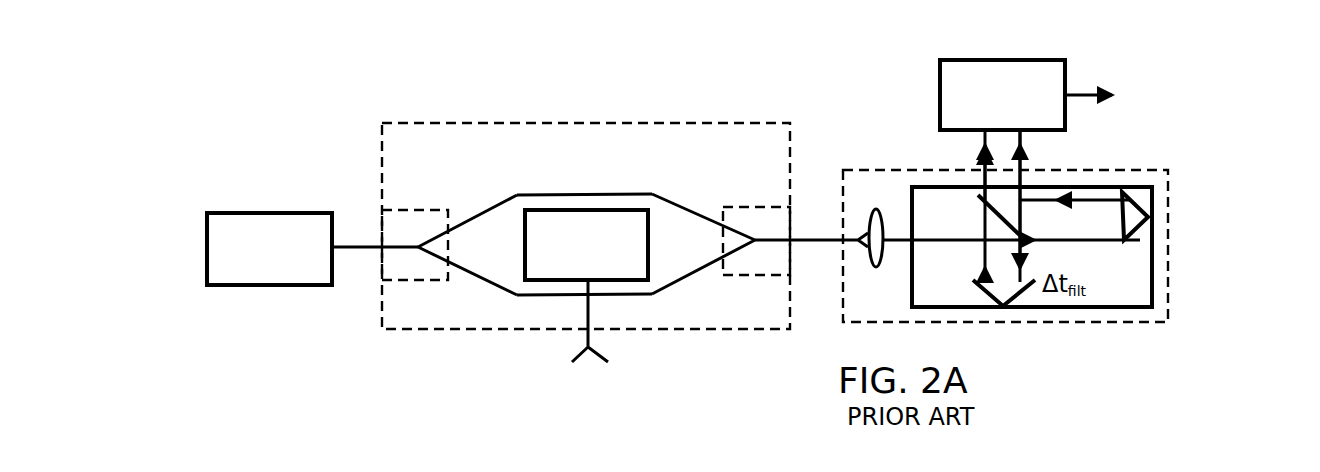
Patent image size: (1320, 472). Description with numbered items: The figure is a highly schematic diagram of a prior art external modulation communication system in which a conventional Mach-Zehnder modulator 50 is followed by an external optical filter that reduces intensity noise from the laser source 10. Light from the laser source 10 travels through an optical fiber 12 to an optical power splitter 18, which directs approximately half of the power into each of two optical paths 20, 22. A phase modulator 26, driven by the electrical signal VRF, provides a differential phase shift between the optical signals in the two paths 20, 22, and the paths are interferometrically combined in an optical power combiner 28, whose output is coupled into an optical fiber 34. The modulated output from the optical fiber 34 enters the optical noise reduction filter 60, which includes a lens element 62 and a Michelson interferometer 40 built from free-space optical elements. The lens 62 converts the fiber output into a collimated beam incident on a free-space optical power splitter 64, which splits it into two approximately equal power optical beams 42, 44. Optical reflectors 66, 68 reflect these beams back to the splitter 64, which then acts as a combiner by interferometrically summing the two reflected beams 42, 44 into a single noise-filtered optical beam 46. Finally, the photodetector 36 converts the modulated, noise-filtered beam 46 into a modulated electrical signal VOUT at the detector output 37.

The laser source 10 is at (267, 213).
The optical fiber 12 is at (346, 246).
The optical power splitter 18 is at (434, 209).
The optical path 20 is at (512, 200).
The optical path 22 is at (512, 295).
The phase modulator 26 is at (523, 246).
The optical power combiner 28 is at (742, 204).
The optical fiber 34 is at (814, 244).
The detector 36 is at (1001, 60).
The detector output 37 is at (1078, 88).
The Michelson interferometer 40 is at (912, 287).
The optical beam 42 is at (1092, 224).
The optical beam 44 is at (1002, 261).
The noise-filtered optical beam 46 is at (1024, 159).
The Mach-Zehnder modulator 50 is at (431, 122).
The optical noise reduction filter 60 is at (867, 167).
The lens element 62 is at (878, 211).
The free-space optical power splitter 64 is at (978, 198).
The optical reflector 66 is at (976, 283).
The optical reflector 68 is at (1133, 240).